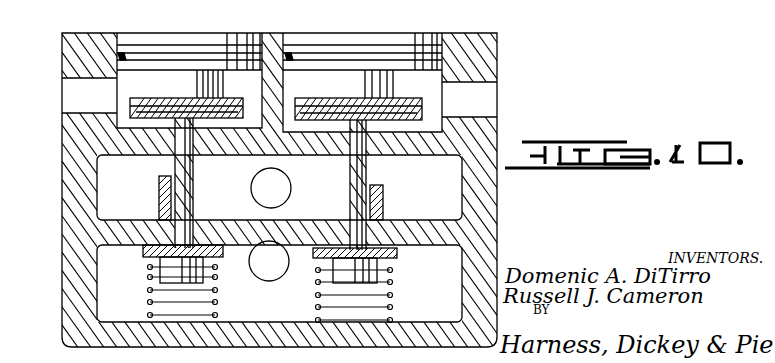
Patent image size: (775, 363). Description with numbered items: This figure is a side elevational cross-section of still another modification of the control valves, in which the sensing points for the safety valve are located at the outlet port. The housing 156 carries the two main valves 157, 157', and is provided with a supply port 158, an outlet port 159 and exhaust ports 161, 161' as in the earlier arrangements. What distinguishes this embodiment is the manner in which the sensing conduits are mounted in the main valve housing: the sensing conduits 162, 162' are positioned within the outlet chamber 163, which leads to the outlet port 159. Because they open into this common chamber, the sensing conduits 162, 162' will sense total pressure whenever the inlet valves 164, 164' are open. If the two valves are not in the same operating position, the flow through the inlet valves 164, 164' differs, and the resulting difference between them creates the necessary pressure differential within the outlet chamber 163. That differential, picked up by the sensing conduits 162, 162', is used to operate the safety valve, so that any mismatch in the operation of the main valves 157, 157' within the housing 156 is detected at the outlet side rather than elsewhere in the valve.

The housing 156 is at (500, 206).
The main valve 157 is at (193, 169).
The main valve 157' is at (365, 170).
The supply port 158 is at (258, 276).
The outlet port 159 is at (284, 173).
The exhaust port 161 is at (65, 96).
The exhaust port 161' is at (494, 98).
The sensing conduit 162 is at (136, 198).
The sensing conduit 162' is at (403, 202).
The outlet chamber 163 is at (330, 215).
The inlet valve 164 is at (163, 281).
The inlet valve 164' is at (377, 285).